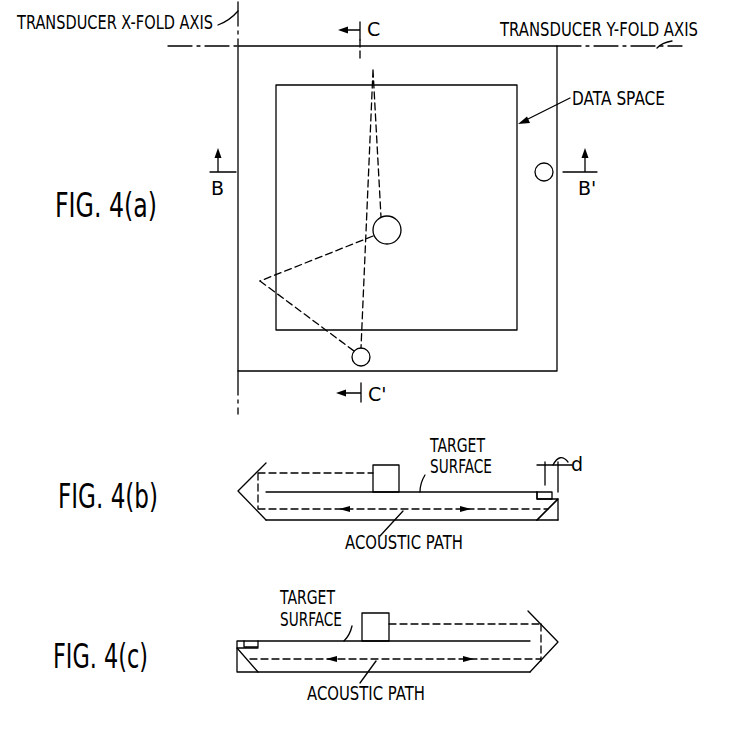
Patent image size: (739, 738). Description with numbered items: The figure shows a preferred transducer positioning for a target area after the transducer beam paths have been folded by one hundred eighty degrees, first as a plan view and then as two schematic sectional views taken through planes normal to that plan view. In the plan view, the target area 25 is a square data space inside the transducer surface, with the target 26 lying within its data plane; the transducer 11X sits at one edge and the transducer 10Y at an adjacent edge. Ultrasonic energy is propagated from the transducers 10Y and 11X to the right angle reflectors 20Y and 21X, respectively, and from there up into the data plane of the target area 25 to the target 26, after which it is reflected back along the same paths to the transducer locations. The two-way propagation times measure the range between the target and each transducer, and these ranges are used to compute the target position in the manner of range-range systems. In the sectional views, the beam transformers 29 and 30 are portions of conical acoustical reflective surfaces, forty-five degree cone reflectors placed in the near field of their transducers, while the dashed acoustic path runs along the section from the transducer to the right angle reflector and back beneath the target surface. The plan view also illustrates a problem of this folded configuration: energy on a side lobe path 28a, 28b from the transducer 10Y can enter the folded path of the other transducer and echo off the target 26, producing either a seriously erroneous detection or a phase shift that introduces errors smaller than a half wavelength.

In FIG. 4A, the target area 25 is at (467, 271).
In FIG. 4A, the target 26 is at (398, 223).
In FIG. 4B, the target 26 is at (408, 451).
In FIG. 4C, the target 26 is at (408, 603).
In FIG. 4A, the transducer 11X is at (547, 181).
In FIG. 4B, the transducer 11X is at (550, 495).
In FIG. 4A, the transducer 10Y is at (370, 357).
In FIG. 4C, the transducer 10Y is at (247, 640).
In FIG. 4A, the side lobe path 28a is at (288, 304).
In FIG. 4A, the side lobe path 28b is at (318, 248).
In FIG. 4B, the right angle reflector 21X is at (247, 500).
In FIG. 4B, the beam transformer 30 is at (560, 516).
In FIG. 4C, the beam transformer 29 is at (240, 665).
In FIG. 4C, the right angle reflector 20Y is at (558, 642).